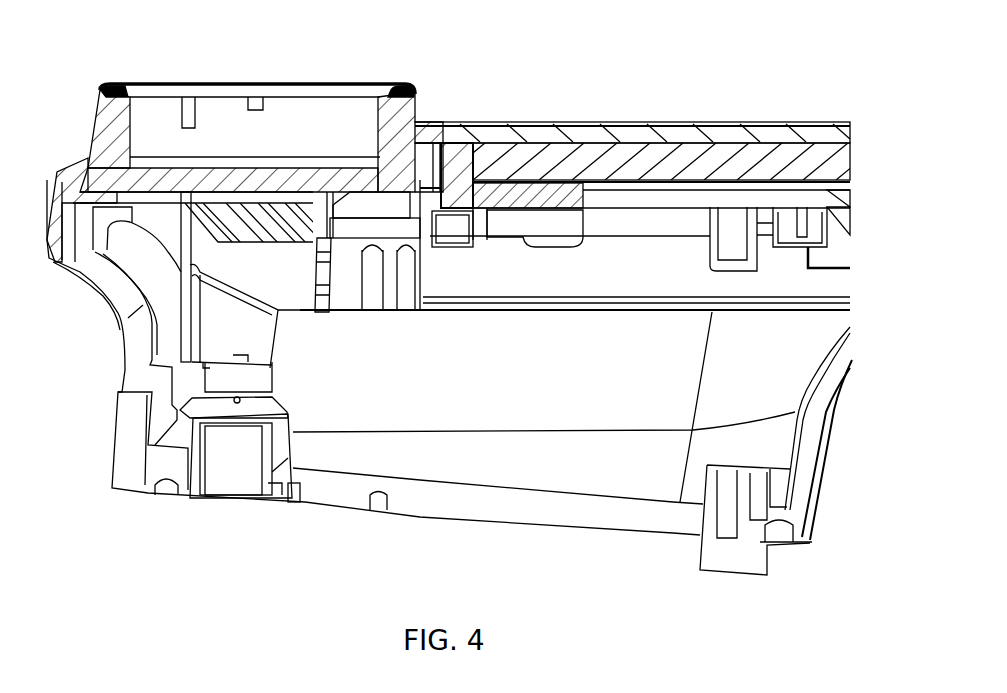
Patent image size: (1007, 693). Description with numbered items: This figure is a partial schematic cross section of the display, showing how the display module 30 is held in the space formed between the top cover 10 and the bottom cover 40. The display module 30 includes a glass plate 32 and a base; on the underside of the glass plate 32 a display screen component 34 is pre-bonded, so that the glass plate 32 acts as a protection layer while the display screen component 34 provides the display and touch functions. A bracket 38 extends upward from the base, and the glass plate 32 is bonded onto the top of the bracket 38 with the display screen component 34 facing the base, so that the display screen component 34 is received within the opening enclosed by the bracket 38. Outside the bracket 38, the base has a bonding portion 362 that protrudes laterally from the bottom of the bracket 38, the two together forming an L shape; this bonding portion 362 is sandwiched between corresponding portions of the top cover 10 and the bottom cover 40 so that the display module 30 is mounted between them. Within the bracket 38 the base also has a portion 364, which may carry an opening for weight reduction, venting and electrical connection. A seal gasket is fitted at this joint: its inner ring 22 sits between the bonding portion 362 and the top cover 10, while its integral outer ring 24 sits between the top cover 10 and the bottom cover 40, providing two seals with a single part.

The top cover 10 is at (118, 88).
The inner ring 22 is at (407, 172).
The outer ring 24 is at (88, 190).
The display module 30 is at (772, 82).
The glass plate 32 is at (601, 120).
The display screen component 34 is at (653, 163).
The bonding portion 362 is at (427, 182).
The portion 364 is at (523, 200).
The bracket 38 is at (455, 160).
The bottom cover 40 is at (357, 509).